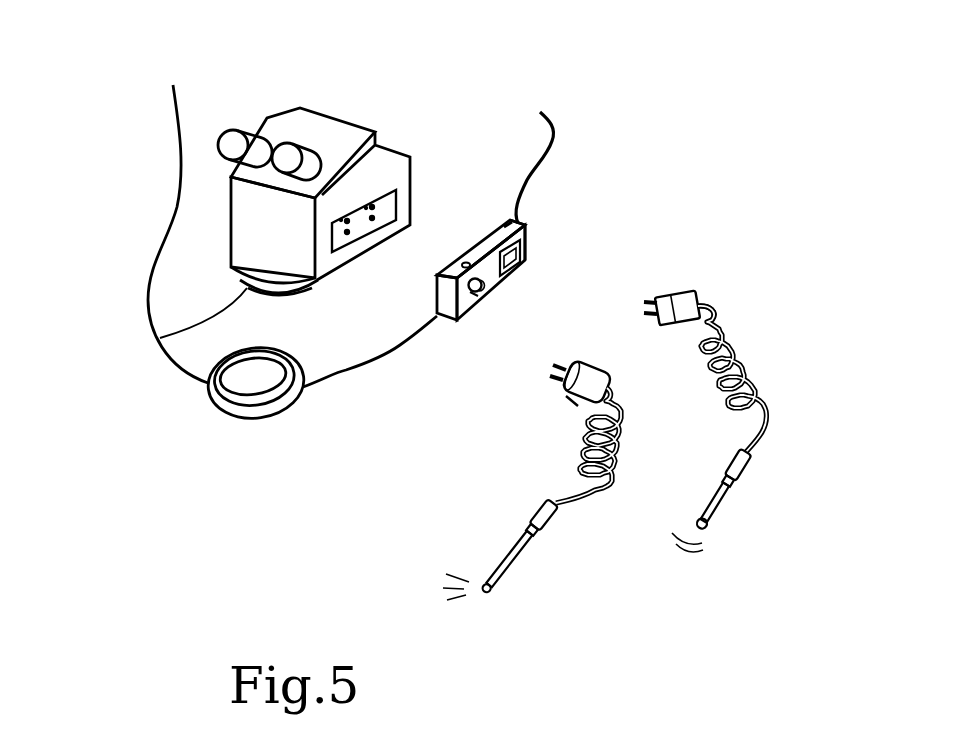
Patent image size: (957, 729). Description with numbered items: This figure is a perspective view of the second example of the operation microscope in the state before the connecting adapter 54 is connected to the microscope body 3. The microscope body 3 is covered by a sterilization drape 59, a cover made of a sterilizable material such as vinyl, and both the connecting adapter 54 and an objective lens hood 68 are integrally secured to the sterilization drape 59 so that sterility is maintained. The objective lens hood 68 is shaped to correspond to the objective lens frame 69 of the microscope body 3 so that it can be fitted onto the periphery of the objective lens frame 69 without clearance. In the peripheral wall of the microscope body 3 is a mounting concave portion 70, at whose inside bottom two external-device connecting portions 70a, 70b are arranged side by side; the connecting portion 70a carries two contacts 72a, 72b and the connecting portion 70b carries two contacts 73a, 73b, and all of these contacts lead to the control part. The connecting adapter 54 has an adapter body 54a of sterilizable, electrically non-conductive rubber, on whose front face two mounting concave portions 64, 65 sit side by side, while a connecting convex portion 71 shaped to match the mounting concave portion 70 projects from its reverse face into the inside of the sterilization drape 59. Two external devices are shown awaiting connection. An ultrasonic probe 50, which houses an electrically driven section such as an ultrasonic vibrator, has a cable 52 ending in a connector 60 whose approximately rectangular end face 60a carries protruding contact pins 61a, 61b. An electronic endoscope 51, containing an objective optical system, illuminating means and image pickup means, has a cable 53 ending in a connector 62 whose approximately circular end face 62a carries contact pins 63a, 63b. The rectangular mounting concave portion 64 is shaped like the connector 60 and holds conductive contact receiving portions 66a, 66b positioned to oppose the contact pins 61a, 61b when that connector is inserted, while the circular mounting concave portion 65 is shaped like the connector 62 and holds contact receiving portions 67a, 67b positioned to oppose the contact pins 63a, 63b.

The microscope body 3 is at (238, 232).
The ultrasonic probe 50 is at (752, 473).
The electronic endoscope 51 is at (551, 528).
The cable 52 is at (772, 396).
The cable 53 is at (622, 443).
The connecting adapter 54 is at (434, 350).
The adapter body 54a is at (522, 221).
The sterilization drape 59 is at (553, 139).
The connector 60 is at (699, 296).
The end face 60a is at (722, 322).
The contact pin 61a is at (648, 299).
The contact pin 61b is at (643, 312).
The connector 62 is at (612, 384).
The end face 62a is at (568, 401).
The contact pin 63a is at (568, 366).
The contact pin 63b is at (556, 377).
The mounting concave portion 64 is at (529, 237).
The mounting concave portion 65 is at (495, 291).
The contact receiving portion 66a is at (509, 223).
The contact receiving portion 66b is at (519, 263).
The contact receiving portion 67a is at (463, 263).
The contact receiving portion 67b is at (471, 298).
The objective lens hood 68 is at (227, 410).
The objective lens frame 69 is at (157, 338).
The mounting concave portion 70 is at (380, 190).
The external-device connecting portion 70a is at (366, 205).
The external-device connecting portion 70b is at (339, 215).
The connecting convex portion 71 is at (485, 234).
The contact 72a is at (388, 183).
The contact 72b is at (374, 221).
The contact 73a is at (350, 214).
The contact 73b is at (347, 235).